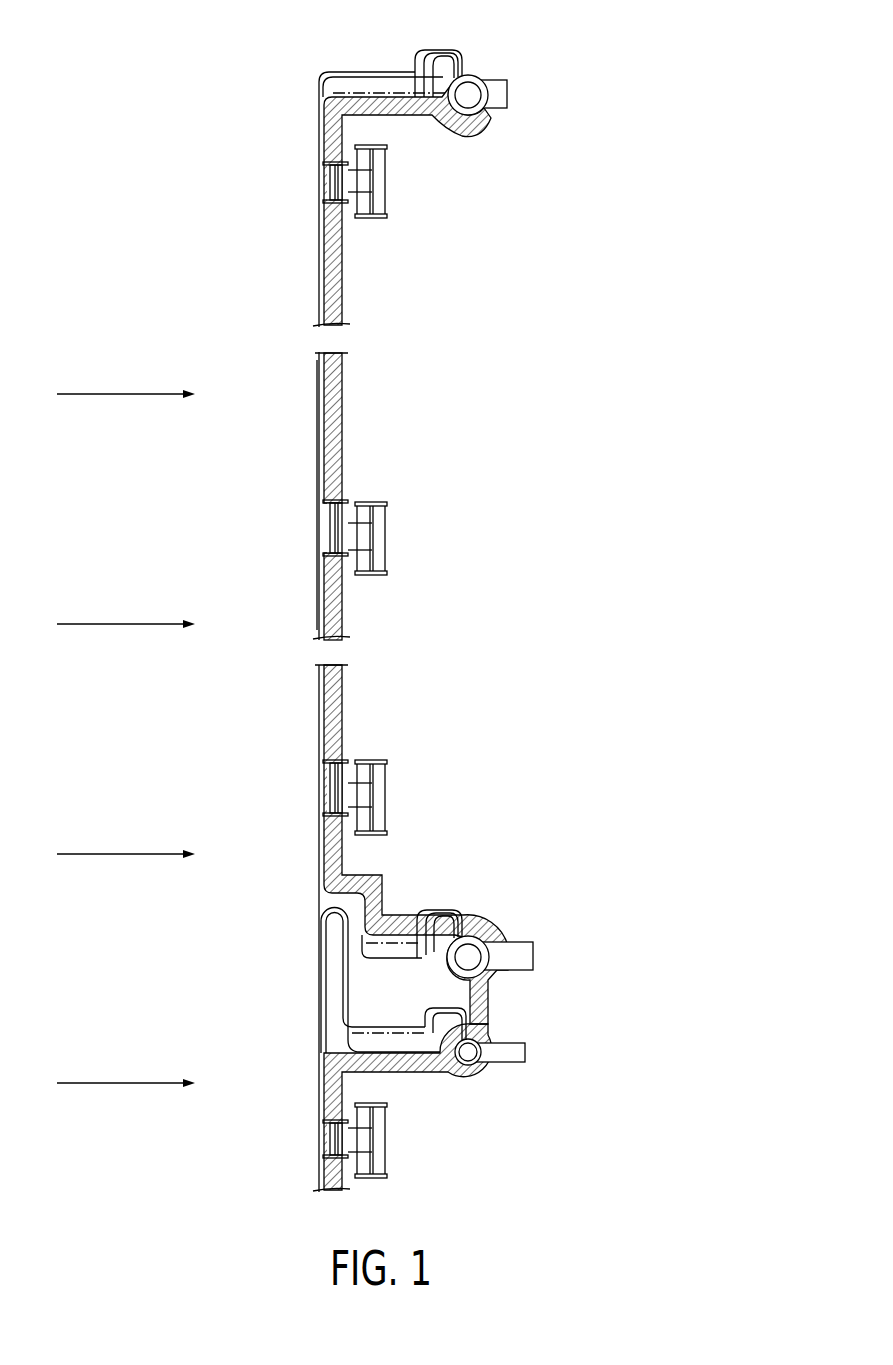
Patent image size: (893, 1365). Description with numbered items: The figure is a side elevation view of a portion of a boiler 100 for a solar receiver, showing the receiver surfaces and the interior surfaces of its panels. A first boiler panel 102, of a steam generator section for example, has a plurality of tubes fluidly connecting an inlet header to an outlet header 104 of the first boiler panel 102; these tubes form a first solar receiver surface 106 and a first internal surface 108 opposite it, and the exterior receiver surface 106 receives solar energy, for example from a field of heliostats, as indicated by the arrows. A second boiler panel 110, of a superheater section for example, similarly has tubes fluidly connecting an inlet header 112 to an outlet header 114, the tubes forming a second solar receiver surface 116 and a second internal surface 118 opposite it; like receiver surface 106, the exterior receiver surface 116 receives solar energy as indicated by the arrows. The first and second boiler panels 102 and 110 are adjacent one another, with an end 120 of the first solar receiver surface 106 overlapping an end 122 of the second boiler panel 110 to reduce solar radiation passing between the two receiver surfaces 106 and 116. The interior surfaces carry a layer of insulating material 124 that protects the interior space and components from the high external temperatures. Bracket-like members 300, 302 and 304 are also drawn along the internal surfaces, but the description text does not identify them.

The boiler 100 is at (258, 66).
The first boiler panel 102 is at (344, 1189).
The outlet header 104 is at (468, 1066).
The first solar receiver surface 106 is at (318, 1018).
The first internal surface 108 is at (322, 1098).
The second boiler panel 110 is at (312, 611).
The inlet header 112 is at (470, 950).
The outlet header 114 is at (470, 93).
The second solar receiver surface 116 is at (319, 393).
The second internal surface 118 is at (327, 386).
The end of first solar receiver surface 120 is at (318, 965).
The end of second boiler panel 122 is at (370, 912).
The insulating material 124 is at (343, 613).
The mounting bracket 300 is at (378, 220).
The mounting bracket 302 is at (383, 576).
The mounting bracket 304 is at (380, 762).